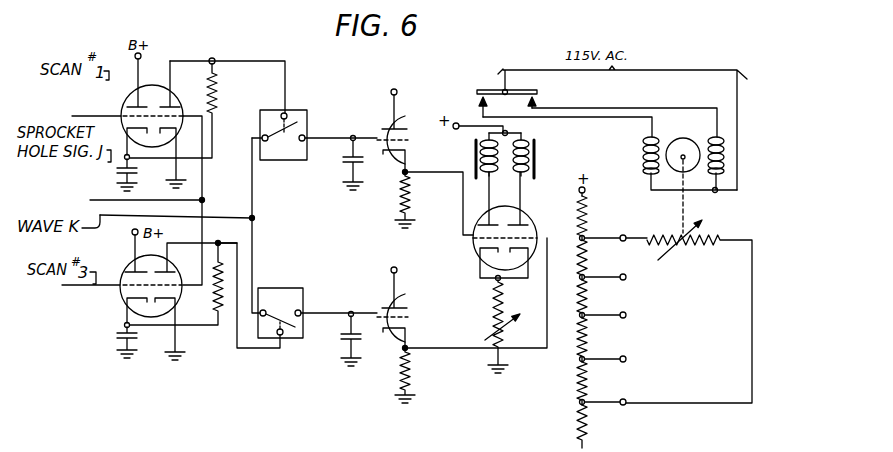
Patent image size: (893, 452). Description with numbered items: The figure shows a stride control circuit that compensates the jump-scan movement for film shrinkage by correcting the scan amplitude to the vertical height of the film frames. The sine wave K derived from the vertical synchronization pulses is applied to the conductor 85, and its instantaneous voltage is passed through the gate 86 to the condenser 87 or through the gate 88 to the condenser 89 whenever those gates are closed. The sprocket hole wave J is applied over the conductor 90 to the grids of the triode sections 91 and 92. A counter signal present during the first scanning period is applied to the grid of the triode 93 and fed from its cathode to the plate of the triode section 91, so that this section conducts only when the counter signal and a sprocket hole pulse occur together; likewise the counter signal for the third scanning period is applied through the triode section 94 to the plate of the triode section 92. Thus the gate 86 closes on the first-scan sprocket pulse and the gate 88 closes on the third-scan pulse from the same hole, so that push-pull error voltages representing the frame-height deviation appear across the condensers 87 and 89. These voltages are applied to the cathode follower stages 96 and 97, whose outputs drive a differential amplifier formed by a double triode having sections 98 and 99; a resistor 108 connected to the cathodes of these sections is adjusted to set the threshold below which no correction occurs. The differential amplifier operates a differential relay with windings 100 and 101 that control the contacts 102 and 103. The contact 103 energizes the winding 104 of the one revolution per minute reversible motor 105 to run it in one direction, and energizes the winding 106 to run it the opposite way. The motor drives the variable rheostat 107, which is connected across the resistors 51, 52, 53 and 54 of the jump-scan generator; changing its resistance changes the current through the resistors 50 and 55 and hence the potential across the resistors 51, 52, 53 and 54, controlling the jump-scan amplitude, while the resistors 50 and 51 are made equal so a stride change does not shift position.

The resistor 50 is at (588, 213).
The resistor 51 is at (588, 258).
The resistor 52 is at (587, 297).
The resistor 53 is at (587, 338).
The resistor 54 is at (587, 378).
The resistor 55 is at (587, 420).
The conductor 85 is at (235, 215).
The gate 86 is at (300, 120).
The condenser 87 is at (347, 161).
The gate 88 is at (312, 281).
The condenser 89 is at (346, 342).
The conductor 90 is at (148, 198).
The triode section 91 is at (185, 109).
The triode section 92 is at (183, 289).
The triode 93 is at (150, 106).
The triode section 94 is at (123, 291).
The cathode follower stage 96 is at (377, 132).
The cathode follower stage 97 is at (377, 306).
The double triode tube section 98 is at (465, 233).
The double triode tube section 99 is at (530, 233).
The relay winding 100 is at (474, 164).
The relay winding 101 is at (528, 161).
The contact 102 is at (491, 88).
The contact 103 is at (529, 88).
The motor winding 104 is at (643, 158).
The reversible motor 105 is at (690, 141).
The motor winding 106 is at (724, 143).
The variable rheostat 107 is at (702, 246).
The resistor 108 is at (500, 316).